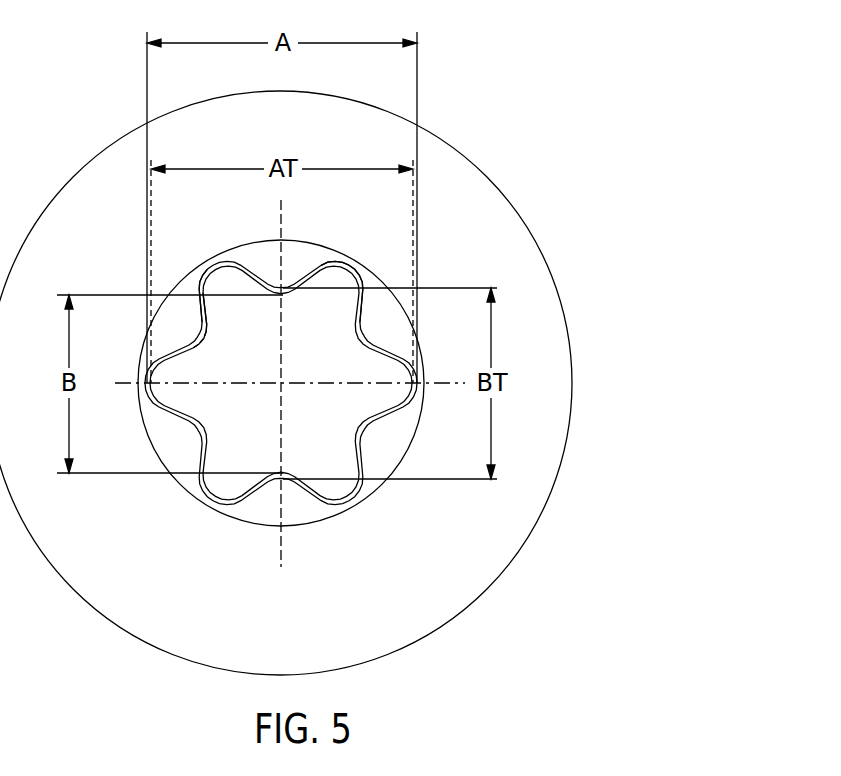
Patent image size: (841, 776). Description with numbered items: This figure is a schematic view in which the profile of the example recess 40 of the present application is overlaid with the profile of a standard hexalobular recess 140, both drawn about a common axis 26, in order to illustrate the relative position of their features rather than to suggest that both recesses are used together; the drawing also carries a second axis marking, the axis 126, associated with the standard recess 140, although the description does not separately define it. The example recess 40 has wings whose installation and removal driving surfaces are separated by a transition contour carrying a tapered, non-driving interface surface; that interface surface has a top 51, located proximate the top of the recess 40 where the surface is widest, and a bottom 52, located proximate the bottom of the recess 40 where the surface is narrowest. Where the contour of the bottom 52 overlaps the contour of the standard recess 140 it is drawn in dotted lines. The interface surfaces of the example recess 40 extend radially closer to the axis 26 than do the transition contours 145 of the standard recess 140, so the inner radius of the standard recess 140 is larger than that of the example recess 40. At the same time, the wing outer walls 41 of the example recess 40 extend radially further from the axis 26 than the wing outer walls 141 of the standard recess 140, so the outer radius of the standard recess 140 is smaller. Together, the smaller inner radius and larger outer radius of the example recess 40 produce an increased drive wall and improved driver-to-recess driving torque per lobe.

The axis 26 is at (290, 383).
The tool axis 126 is at (290, 383).
The recess 40 is at (233, 258).
The recess 140 is at (207, 275).
The wing outer walls 141 is at (333, 262).
The wing outer walls 41 is at (348, 262).
The top 51 is at (207, 328).
The bottom 52 is at (215, 322).
The transition contours 145 is at (208, 335).